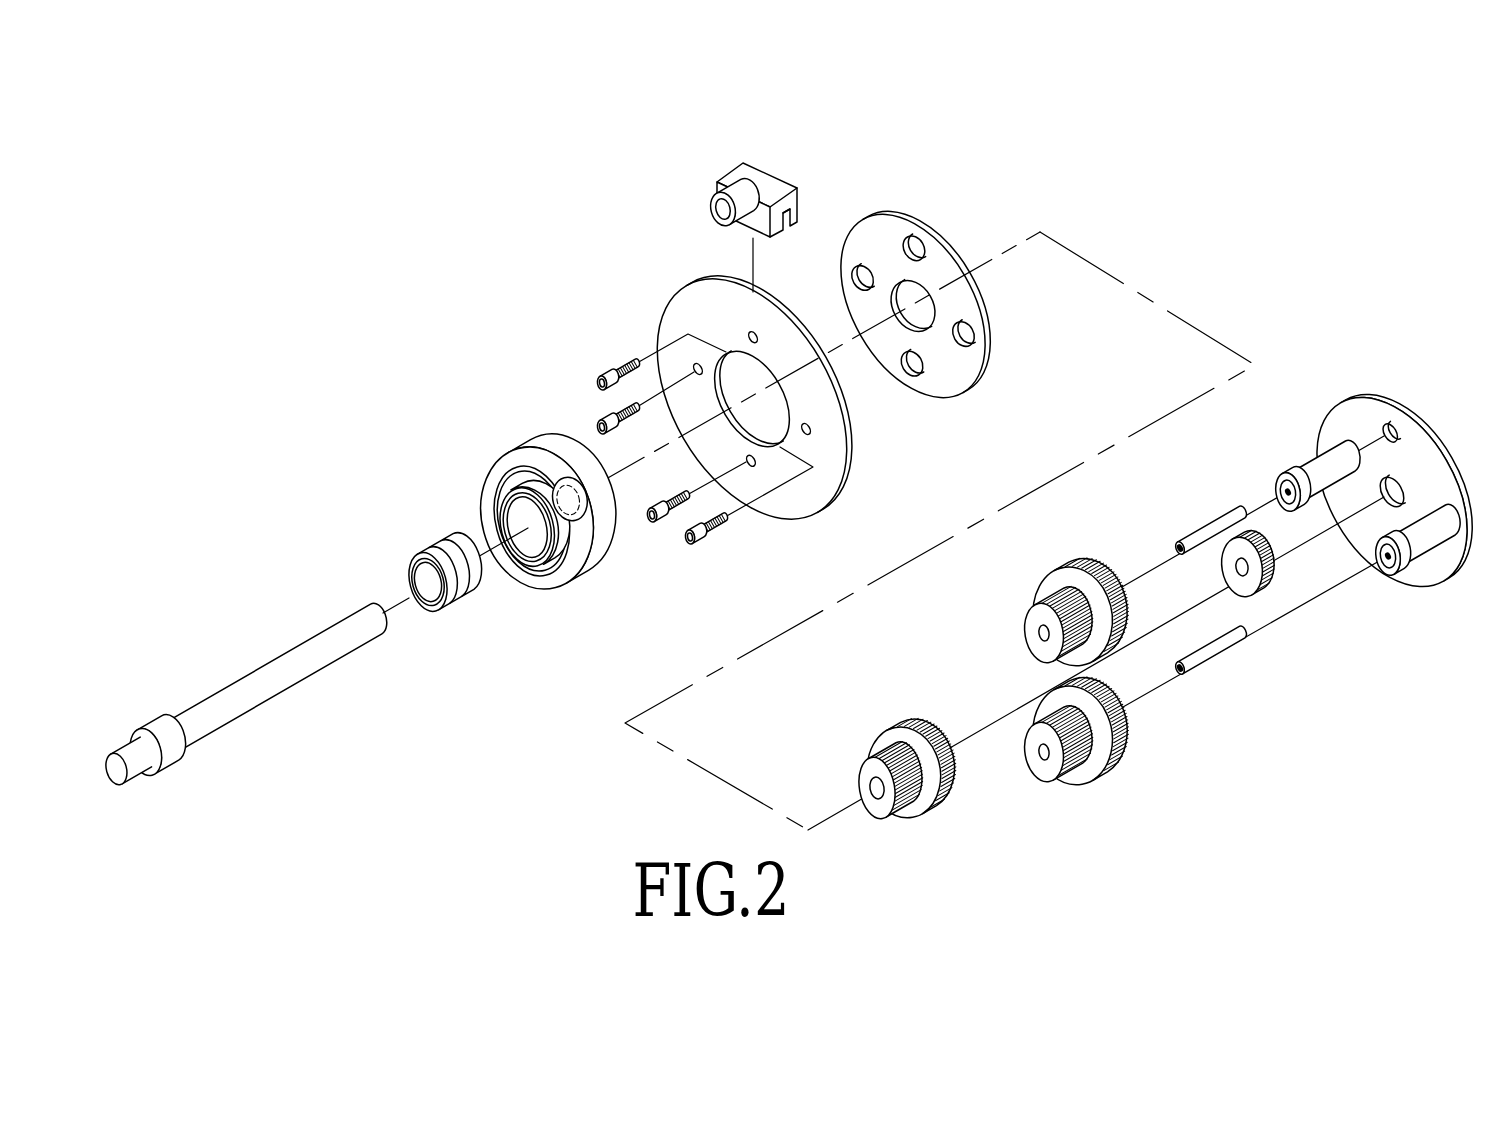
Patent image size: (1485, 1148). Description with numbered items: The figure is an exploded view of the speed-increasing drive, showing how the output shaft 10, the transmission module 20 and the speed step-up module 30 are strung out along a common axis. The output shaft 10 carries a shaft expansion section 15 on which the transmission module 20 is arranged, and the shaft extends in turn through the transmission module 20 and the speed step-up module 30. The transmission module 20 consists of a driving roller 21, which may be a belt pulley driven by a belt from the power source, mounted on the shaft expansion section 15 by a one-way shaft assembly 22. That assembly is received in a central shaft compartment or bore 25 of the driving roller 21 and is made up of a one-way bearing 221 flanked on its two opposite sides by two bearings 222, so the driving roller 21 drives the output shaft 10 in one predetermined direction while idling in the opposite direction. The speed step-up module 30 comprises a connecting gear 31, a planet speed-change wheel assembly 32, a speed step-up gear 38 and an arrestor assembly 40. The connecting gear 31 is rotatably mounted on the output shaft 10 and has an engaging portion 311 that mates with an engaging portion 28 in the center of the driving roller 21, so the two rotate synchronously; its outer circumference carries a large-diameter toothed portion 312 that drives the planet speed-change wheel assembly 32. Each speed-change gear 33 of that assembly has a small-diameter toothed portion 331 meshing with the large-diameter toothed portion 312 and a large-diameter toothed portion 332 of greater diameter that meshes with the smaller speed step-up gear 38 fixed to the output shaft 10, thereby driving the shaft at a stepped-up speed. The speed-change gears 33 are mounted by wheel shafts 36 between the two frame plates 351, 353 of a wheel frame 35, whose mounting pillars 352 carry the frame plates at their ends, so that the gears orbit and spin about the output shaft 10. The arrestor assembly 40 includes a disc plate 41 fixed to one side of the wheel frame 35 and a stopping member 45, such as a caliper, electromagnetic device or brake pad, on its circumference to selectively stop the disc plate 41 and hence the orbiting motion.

The output shaft 10 is at (233, 690).
The shaft expansion section 15 is at (152, 714).
The transmission module 20 is at (497, 530).
The driving roller 21 is at (528, 481).
The one-way shaft assembly 22 is at (444, 583).
The one-way bearing 221 is at (464, 610).
The bearings 222 is at (450, 606).
The shaft compartment or bore 25 is at (514, 518).
The engaging portion 28 is at (571, 470).
The speed step-up module 30 is at (1060, 670).
The connecting gear 31 is at (877, 783).
The engaging portion 311 is at (865, 756).
The large-diameter toothed portion 312 is at (897, 730).
The planet speed-change wheel assembly 32 is at (1132, 520).
The speed-change gear 33 is at (1057, 704).
The small-diameter toothed portion 331 is at (1030, 605).
The large-diameter toothed portion 332 is at (1060, 563).
The wheel frame 35 is at (1146, 550).
The frame plate 351 is at (1405, 412).
The mounting pillars 352 is at (1292, 482).
The frame plate 353 is at (893, 212).
The wheel shaft 36 is at (1208, 524).
The speed step-up gear 38 is at (1275, 597).
The arrestor assembly 40 is at (728, 318).
The disc plate 41 is at (665, 322).
The stopping member 45 is at (756, 172).